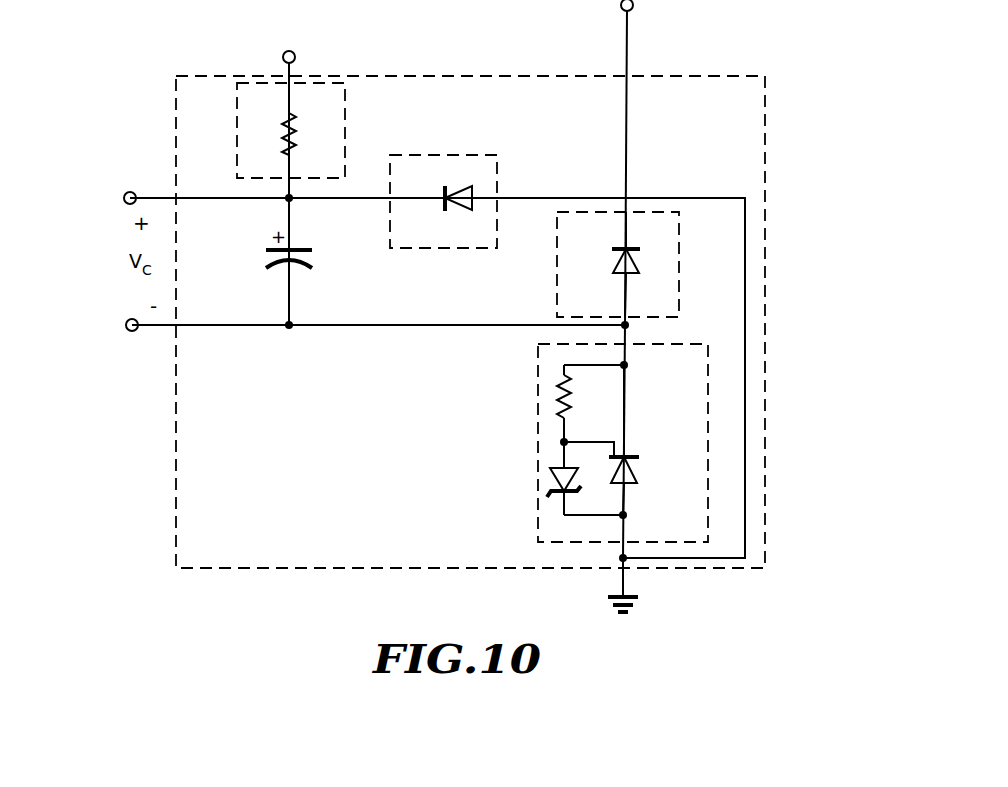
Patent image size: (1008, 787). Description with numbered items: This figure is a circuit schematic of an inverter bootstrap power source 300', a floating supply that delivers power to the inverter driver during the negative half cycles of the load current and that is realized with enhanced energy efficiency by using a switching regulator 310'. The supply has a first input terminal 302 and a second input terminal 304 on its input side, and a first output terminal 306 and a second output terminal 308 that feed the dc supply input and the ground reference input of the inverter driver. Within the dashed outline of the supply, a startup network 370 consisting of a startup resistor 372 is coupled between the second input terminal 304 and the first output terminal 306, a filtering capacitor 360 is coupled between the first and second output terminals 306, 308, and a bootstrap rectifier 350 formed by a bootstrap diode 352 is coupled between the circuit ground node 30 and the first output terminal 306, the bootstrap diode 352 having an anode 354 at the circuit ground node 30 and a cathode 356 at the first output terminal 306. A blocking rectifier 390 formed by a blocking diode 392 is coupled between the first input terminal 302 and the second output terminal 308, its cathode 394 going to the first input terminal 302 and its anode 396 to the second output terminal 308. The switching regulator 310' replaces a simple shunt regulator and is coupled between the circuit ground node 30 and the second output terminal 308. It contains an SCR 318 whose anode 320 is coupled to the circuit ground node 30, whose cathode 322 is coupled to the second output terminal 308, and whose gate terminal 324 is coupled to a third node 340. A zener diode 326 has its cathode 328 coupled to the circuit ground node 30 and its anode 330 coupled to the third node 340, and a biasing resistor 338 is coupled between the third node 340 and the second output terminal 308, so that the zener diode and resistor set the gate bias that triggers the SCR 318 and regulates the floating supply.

The circuit ground node 30 is at (620, 571).
The bootstrap power source 300' is at (470, 308).
The first input terminal 302 is at (634, 3).
The second input terminal 304 is at (296, 54).
The first output terminal 306 is at (124, 194).
The second output terminal 308 is at (126, 321).
The switching regulator 310' is at (639, 431).
The SCR 318 is at (639, 475).
The anode 320 is at (628, 511).
The cathode 322 is at (624, 411).
The gate terminal 324 is at (611, 442).
The zener diode 326 is at (552, 483).
The cathode 328 is at (562, 515).
The anode 330 is at (562, 462).
The biasing resistor 338 is at (559, 404).
The third node 340 is at (561, 440).
The bootstrap rectifier 350 is at (452, 156).
The bootstrap diode 352 is at (468, 193).
The anode 354 is at (498, 199).
The cathode 356 is at (422, 203).
The filtering capacitor 360 is at (298, 247).
The startup network 370 is at (345, 102).
The startup resistor 372 is at (286, 134).
The blocking rectifier 390 is at (680, 272).
The blocking diode 392 is at (637, 265).
The cathode 394 is at (622, 243).
The anode 396 is at (621, 300).